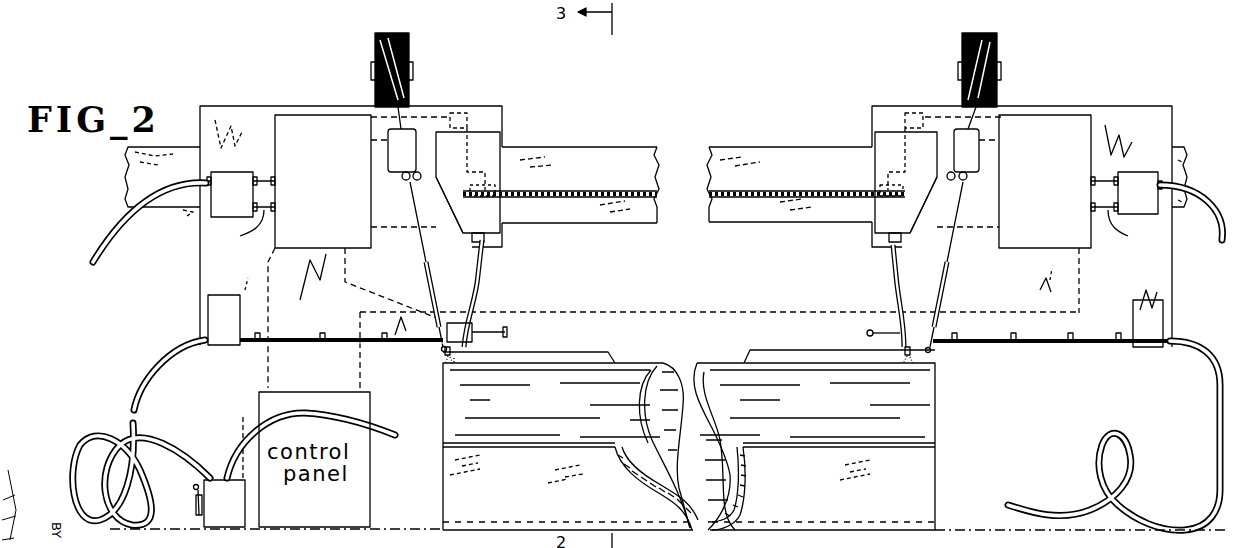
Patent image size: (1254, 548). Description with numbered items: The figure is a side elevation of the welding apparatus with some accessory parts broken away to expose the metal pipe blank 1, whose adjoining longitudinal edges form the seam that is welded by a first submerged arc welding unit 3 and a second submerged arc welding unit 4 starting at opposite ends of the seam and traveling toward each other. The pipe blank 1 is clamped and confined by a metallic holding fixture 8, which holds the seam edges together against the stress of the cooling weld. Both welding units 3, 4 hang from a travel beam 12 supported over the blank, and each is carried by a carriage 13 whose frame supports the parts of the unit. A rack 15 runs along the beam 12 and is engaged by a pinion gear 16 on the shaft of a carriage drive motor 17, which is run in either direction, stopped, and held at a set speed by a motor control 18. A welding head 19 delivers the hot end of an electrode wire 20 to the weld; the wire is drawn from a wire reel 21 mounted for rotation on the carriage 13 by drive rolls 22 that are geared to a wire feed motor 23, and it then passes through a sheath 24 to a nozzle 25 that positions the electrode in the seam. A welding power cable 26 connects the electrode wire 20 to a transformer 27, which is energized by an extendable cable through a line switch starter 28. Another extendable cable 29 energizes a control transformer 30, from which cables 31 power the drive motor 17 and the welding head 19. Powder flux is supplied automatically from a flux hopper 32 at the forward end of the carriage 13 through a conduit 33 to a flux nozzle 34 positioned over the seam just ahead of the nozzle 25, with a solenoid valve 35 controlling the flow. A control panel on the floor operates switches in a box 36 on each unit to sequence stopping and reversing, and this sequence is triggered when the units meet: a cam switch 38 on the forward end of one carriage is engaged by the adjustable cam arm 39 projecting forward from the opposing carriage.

The metal pipe blank 1 is at (630, 373).
The first submerged arc welding unit 3 is at (512, 138).
The second submerged arc welding unit 4 is at (853, 142).
The holding fixture 8 is at (913, 488).
The travel beam 12 is at (731, 156).
The carriage 13 is at (254, 106).
The rack 15 is at (594, 187).
The pinion gear 16 is at (468, 188).
The carriage drive motor 17 is at (484, 122).
The motor control 18 is at (460, 112).
The welding head 19 is at (432, 80).
The electrode wire 20 is at (406, 128).
The wire reel 21 is at (375, 50).
The drive rolls 22 is at (408, 181).
The wire feed motor 23 is at (406, 160).
The sheath 24 is at (421, 230).
The nozzle 25 is at (441, 350).
The welding power cable 26 is at (308, 344).
The transformer 27 is at (230, 302).
The line switch starter 28 is at (234, 433).
The extendable cable 29 is at (116, 235).
The control transformer 30 is at (686, 194).
The cables 31 is at (682, 226).
The flux hopper 32 is at (470, 202).
The conduit 33 is at (478, 276).
The flux nozzle 34 is at (462, 349).
The solenoid valve 35 is at (488, 242).
The box 36 is at (683, 181).
The cam switch 38 is at (508, 331).
The cam arm 39 is at (867, 332).